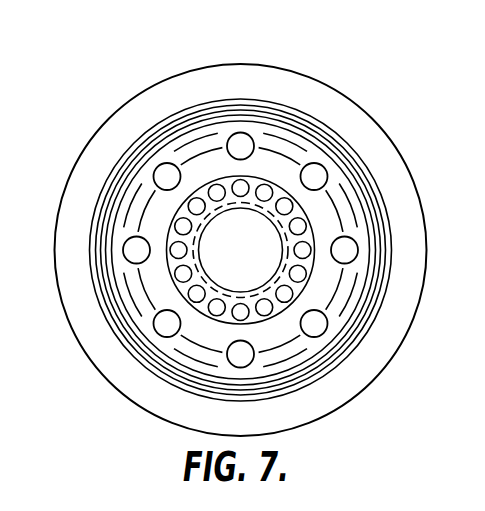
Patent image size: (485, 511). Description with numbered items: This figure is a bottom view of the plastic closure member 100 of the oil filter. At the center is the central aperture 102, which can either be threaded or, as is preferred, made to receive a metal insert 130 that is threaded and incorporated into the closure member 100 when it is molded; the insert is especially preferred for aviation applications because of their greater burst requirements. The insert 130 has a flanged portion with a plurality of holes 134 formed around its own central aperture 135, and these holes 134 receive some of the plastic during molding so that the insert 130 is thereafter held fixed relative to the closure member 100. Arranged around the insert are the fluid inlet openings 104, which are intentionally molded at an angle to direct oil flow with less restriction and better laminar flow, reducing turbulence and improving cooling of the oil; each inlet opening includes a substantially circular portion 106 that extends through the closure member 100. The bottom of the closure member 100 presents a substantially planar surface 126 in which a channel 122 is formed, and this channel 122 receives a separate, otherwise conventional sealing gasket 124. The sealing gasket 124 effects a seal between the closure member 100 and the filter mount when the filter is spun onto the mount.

The closure member 100 is at (354, 57).
The central aperture 102 is at (197, 245).
The fluid inlet openings 104 is at (147, 264).
The circular portion 106 is at (240, 342).
The channel 122 is at (317, 377).
The sealing gasket 124 is at (358, 327).
The planar surface 126 is at (347, 183).
The insert 130 is at (250, 178).
The holes 134 is at (190, 186).
The central aperture 135 is at (215, 283).